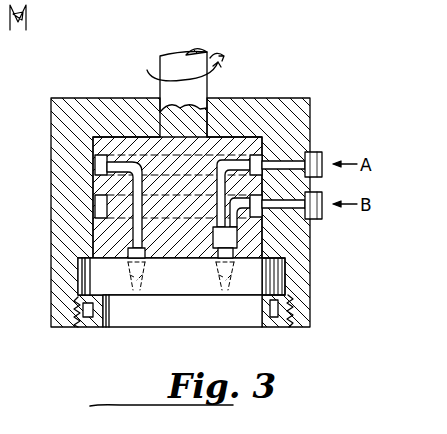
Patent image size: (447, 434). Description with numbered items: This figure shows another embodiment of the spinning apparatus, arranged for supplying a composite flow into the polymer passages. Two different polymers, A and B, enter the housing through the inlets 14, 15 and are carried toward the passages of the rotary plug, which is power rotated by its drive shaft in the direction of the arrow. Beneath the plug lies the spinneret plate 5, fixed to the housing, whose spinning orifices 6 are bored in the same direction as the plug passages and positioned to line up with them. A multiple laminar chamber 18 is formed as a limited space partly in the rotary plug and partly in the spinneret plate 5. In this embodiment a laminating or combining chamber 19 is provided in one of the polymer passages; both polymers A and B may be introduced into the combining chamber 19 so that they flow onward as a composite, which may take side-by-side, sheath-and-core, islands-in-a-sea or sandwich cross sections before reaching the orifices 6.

The spinneret plate 5 is at (173, 298).
The spinning orifices 6 is at (242, 296).
The inlet 14 is at (287, 165).
The inlet 15 is at (295, 207).
The multiple laminar chamber 18 is at (205, 253).
The laminating or combining chamber 19 is at (213, 250).